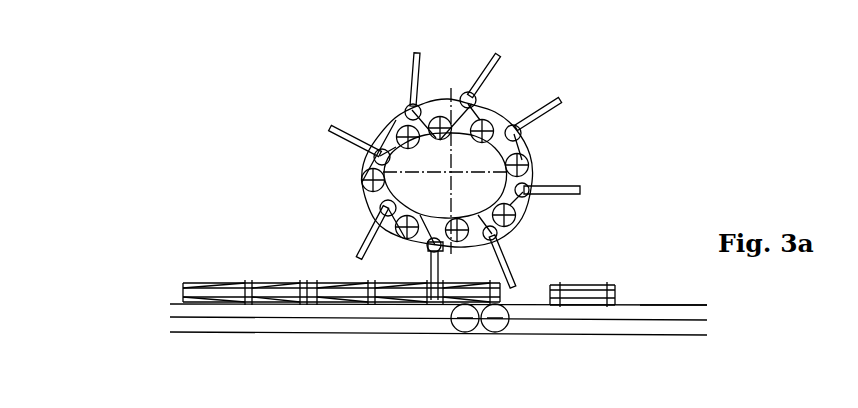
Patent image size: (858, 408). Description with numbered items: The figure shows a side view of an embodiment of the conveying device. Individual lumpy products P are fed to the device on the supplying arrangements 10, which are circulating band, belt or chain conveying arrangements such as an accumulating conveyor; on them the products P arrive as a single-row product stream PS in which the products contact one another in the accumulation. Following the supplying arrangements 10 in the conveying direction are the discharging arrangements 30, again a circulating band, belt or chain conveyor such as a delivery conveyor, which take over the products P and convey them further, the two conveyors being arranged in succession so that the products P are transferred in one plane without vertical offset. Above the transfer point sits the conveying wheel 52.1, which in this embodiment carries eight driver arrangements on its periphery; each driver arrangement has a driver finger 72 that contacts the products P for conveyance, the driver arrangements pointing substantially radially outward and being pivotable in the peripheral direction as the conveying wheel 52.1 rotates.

The conveying wheel 52.1 is at (397, 128).
The driver finger 72 is at (500, 63).
The supplying arrangements 10 is at (180, 308).
The product stream PS is at (282, 278).
The product P is at (593, 297).
The discharging arrangements 30 is at (668, 312).